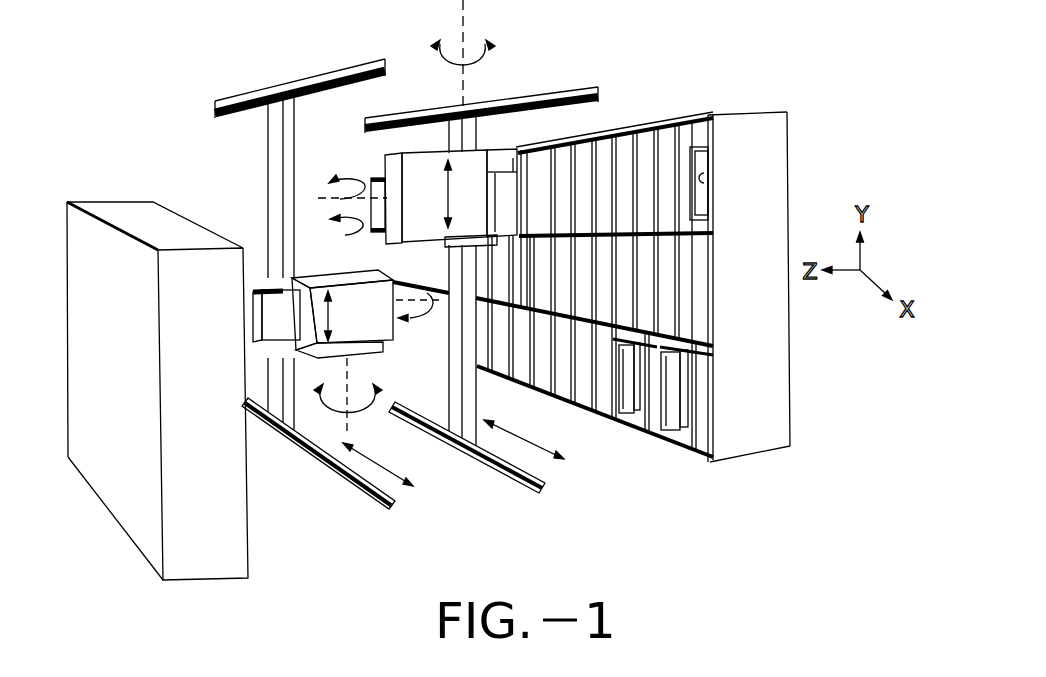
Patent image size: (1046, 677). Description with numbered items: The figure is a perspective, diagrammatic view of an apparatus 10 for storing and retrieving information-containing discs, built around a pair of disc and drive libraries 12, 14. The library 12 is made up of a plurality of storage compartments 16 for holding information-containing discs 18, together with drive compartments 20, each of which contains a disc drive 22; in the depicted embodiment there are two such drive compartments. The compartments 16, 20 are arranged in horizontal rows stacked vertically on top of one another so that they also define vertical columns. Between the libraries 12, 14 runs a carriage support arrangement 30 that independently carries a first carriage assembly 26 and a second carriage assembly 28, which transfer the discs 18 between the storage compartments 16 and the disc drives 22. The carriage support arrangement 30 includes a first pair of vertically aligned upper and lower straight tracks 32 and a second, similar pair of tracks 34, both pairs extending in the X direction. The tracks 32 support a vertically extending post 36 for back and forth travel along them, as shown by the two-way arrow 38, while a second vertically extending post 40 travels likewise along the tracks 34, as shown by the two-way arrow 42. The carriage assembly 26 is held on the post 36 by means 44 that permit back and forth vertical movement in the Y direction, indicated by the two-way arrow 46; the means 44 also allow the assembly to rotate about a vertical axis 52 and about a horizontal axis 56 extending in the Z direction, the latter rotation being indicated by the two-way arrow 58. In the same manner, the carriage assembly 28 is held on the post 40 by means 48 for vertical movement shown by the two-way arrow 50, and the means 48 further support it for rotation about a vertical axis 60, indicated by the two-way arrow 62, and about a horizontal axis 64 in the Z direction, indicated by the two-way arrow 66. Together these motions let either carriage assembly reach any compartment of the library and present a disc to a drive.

The apparatus for storing and retrieving information-containing discs 10 is at (652, 510).
The disc and drive library 12 is at (774, 103).
The disc and drive library 14 is at (214, 588).
The storage compartment 16 is at (705, 180).
The information-containing disc 18 is at (693, 198).
The drive compartment 20 is at (637, 440).
The disc drive 22 is at (615, 383).
The first carriage assembly 26 is at (383, 170).
The second carriage assembly 28 is at (381, 353).
The carriage support arrangement 30 is at (240, 80).
The tracks 32 is at (570, 90).
The tracks 34 is at (297, 85).
The vertically extending post 36 is at (476, 386).
The two-way arrow 38 is at (513, 430).
The vertically extending post 40 is at (274, 184).
The two-way arrow 42 is at (383, 462).
The support means 44 is at (480, 240).
The two-way arrow 46 is at (445, 188).
The support means 48 is at (283, 315).
The two-way arrow 50 is at (332, 313).
The vertical axis 52 is at (467, 80).
The horizontal axis 56 is at (318, 195).
The two-way arrow 58 is at (357, 232).
The vertical axis 60 is at (348, 425).
The two-way arrow 62 is at (347, 415).
The horizontal axis 64 is at (435, 60).
The two-way arrow 66 is at (411, 292).